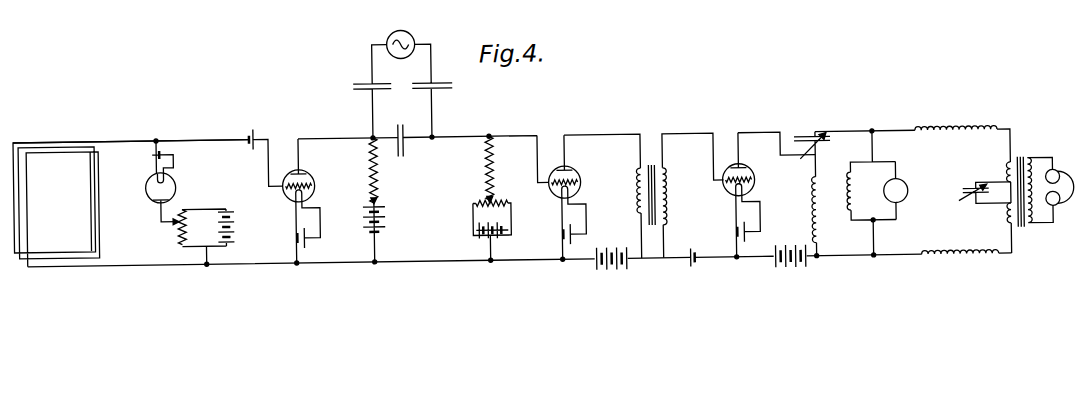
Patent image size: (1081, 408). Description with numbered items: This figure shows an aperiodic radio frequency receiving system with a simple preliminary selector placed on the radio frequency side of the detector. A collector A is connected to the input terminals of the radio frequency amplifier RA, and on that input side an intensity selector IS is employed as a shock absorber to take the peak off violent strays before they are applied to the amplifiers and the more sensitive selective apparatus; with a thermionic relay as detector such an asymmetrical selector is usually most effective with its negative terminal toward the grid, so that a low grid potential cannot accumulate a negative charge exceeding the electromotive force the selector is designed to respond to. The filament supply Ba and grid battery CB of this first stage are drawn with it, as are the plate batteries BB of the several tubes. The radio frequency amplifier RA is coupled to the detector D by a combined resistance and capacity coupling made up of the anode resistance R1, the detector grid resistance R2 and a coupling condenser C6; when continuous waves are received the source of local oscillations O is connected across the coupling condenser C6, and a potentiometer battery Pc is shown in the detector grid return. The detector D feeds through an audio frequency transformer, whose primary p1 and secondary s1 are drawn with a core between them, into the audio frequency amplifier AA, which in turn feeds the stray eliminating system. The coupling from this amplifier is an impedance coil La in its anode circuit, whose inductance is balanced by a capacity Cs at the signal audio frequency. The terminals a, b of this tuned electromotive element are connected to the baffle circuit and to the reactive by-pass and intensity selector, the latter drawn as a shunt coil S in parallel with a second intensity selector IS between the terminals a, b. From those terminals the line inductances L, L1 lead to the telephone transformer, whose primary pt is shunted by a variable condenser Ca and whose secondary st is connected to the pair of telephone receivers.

The collector A is at (132, 203).
The intensity selector IS is at (512, 179).
The filament battery with rheostat Ba is at (193, 238).
The grid C battery CB is at (472, 197).
The radio frequency amplifier RA is at (301, 189).
The plate B battery BB is at (551, 257).
The anode resistance R1 is at (383, 200).
The coupling condenser C6 is at (410, 129).
The source of local oscillations O is at (402, 72).
The detector grid resistance R2 is at (501, 168).
The potentiometer battery Pc is at (485, 223).
The detector D is at (567, 185).
The audio frequency transformer primary p1 is at (630, 212).
The audio frequency transformer secondary s1 is at (676, 212).
The audio frequency amplifier AA is at (741, 181).
The capacity Cs is at (809, 140).
The impedance coil La is at (801, 217).
The shunt coil S with indicator S is at (863, 193).
The terminal a is at (871, 119).
The terminal b is at (874, 267).
The line inductance L is at (955, 113).
The line inductance L' L1 is at (960, 267).
The telephone transformer primary pt is at (1003, 203).
The variable condenser Ca is at (978, 202).
The telephone transformer secondary st with receivers st is at (1050, 190).